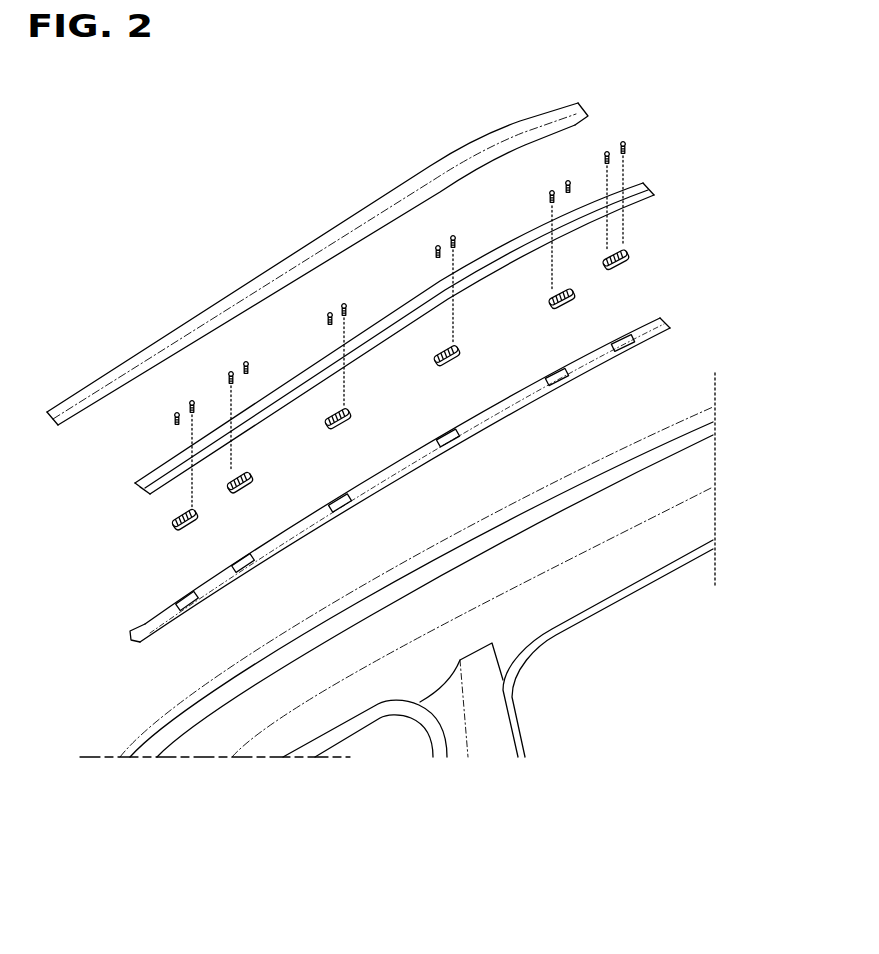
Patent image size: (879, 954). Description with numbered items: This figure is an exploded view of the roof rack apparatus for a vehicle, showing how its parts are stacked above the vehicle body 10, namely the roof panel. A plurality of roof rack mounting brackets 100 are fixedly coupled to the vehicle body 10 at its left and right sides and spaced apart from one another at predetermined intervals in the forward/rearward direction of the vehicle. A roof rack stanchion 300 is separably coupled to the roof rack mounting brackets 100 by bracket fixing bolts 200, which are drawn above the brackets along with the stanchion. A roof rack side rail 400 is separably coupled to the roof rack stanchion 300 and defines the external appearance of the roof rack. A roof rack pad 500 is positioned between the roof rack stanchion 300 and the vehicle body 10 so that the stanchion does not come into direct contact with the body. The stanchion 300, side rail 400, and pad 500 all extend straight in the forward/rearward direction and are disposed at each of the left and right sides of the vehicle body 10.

The vehicle body 10 is at (203, 742).
The roof rack mounting bracket 100 is at (172, 523).
The bracket fixing bolt 200 is at (245, 362).
The roof rack stanchion 300 is at (134, 484).
The roof rack side rail 400 is at (458, 147).
The roof rack pad 500 is at (148, 626).